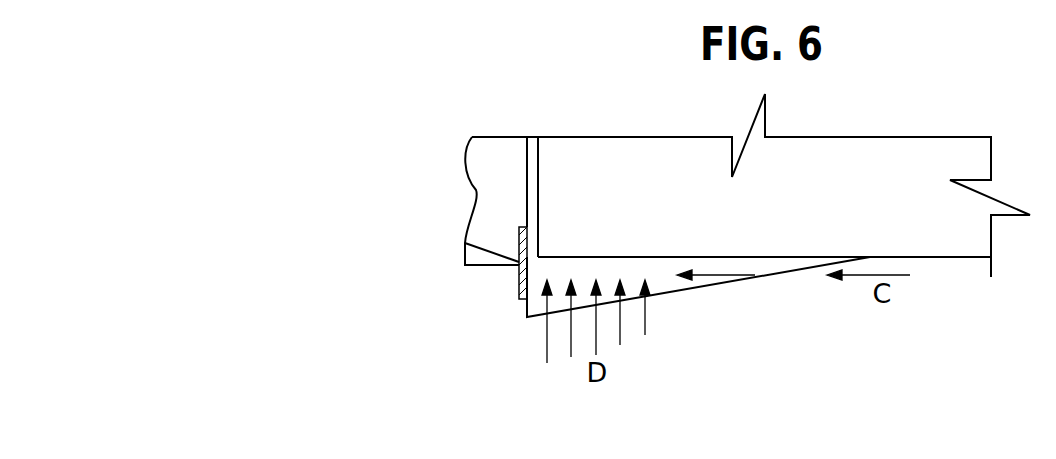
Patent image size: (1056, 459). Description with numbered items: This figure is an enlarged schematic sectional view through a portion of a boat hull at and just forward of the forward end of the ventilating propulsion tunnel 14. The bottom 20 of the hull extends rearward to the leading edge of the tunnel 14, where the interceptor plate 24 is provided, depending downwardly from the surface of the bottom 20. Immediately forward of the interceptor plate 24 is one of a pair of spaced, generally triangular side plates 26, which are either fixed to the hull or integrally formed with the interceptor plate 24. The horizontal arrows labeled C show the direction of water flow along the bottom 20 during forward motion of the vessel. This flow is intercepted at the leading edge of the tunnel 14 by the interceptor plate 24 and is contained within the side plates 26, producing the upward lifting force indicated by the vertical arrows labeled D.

The ventilating propulsion tunnel 14 is at (473, 262).
The bottom of the hull 20 is at (751, 185).
The interceptor plate 24 is at (520, 280).
The side plate 26 is at (587, 267).